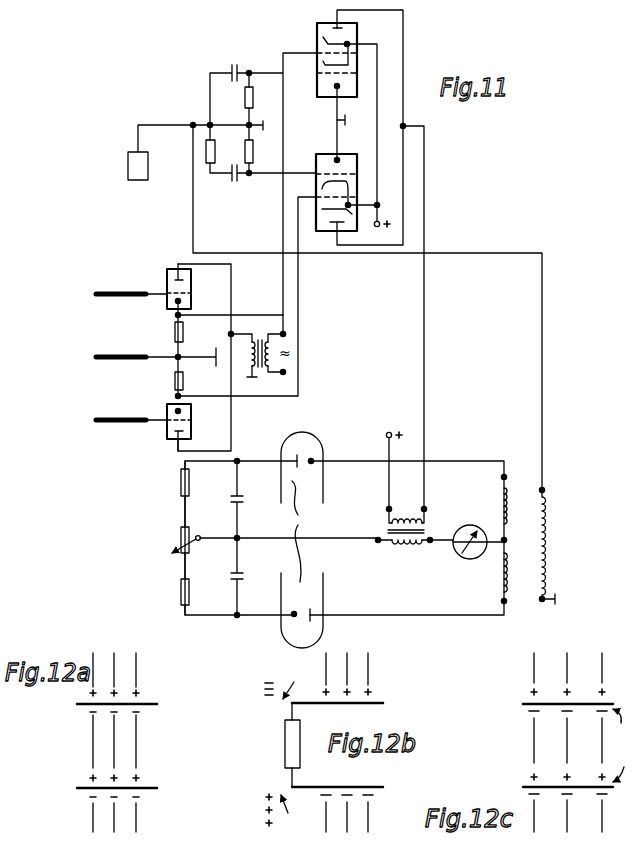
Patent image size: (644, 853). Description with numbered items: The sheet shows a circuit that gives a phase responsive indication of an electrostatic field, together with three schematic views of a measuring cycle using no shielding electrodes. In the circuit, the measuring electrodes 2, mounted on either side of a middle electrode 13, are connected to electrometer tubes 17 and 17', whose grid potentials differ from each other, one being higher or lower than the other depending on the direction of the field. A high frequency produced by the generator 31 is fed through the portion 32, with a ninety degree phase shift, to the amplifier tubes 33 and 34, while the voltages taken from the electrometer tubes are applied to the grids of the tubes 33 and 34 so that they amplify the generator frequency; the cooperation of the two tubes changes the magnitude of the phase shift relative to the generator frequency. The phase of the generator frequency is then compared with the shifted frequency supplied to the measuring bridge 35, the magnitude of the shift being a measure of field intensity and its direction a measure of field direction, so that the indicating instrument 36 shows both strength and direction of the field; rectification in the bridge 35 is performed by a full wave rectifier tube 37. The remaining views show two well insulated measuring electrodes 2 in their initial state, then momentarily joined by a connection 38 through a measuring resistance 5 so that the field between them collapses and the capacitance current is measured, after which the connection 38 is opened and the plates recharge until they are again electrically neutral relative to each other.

In FIG. 11, the measuring electrodes 2 is at (122, 358).
In FIG. 12A, the measuring electrodes 2 is at (109, 749).
In FIG. 12B, the measuring resistance 5 is at (285, 750).
In FIG. 11, the middle electrode 13 is at (125, 358).
In FIG. 11, the electrometer tube 17 is at (191, 286).
In FIG. 11, the electrometer tube 17' is at (194, 427).
In FIG. 11, the generator 31 is at (143, 180).
In FIG. 11, the portion 32 is at (215, 151).
In FIG. 11, the amplifier tube 33 is at (358, 31).
In FIG. 11, the amplifier tube 34 is at (322, 233).
In FIG. 11, the measuring circuit 35 is at (356, 470).
In FIG. 11, the indicating instrument 36 is at (470, 525).
In FIG. 11, the full wave rectifier tube 37 is at (302, 540).
In FIG. 12B, the connection 38 is at (290, 783).